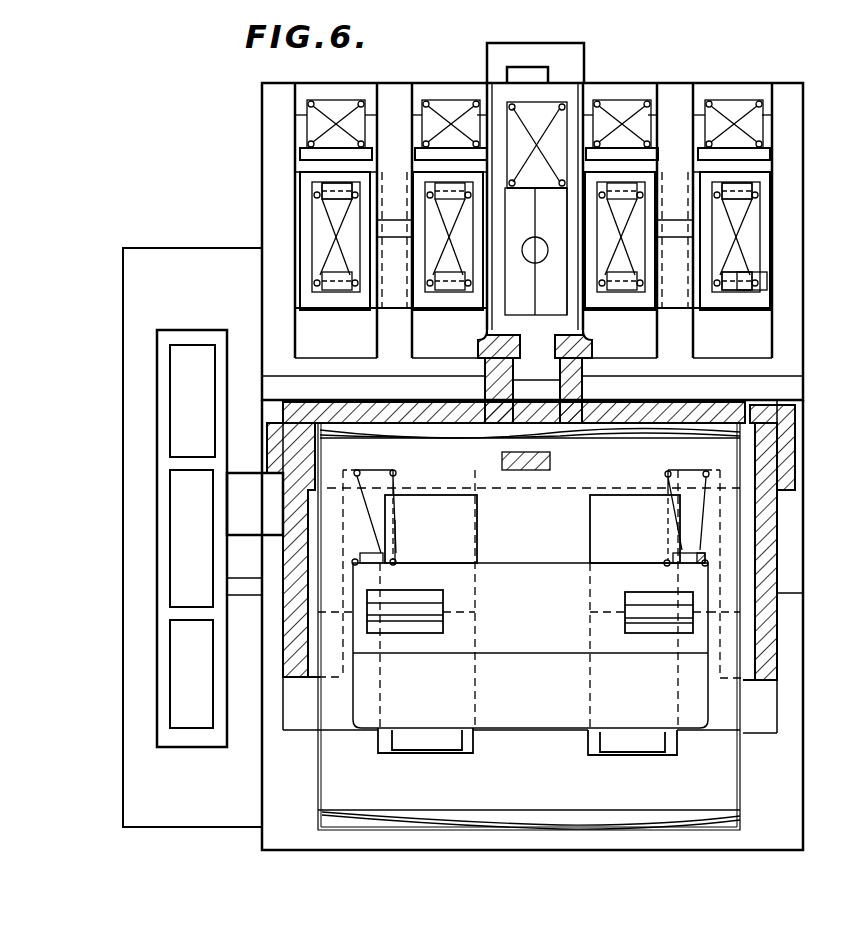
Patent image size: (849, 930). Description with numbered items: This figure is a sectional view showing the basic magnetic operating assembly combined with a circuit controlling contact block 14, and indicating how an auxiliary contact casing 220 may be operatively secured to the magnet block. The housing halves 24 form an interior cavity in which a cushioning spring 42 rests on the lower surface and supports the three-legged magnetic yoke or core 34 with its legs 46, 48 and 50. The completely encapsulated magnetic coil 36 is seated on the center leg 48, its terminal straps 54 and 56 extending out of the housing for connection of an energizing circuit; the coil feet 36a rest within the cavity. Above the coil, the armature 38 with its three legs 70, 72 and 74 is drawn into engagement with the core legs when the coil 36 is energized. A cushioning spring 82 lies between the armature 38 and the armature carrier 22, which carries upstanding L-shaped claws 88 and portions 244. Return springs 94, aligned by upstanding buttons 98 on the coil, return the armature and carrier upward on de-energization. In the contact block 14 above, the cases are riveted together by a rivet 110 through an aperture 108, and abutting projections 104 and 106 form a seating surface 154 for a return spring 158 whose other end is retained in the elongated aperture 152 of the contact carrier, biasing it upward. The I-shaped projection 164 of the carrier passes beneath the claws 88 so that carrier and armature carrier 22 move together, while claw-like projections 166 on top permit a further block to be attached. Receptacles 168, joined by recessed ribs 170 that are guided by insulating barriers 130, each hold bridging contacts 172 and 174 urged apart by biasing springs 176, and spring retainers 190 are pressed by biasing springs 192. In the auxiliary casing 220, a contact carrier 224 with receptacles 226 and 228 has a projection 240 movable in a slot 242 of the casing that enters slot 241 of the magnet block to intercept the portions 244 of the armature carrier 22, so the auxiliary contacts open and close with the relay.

The contact block 14 is at (810, 146).
The armature carrier 22 is at (816, 521).
The housing halves 24 is at (256, 842).
The magnetic yoke or core 34 is at (545, 789).
The magnetic coil 36 is at (525, 578).
The feet of armature block 36a is at (423, 740).
The armature 38 is at (790, 445).
The cushioning spring 42 is at (495, 830).
The leg of core 46 is at (378, 712).
The center leg of core 48 is at (590, 696).
The leg of core 50 is at (680, 691).
The terminal strap 54 is at (423, 596).
The terminal strap 56 is at (653, 598).
The armature leg 70 is at (396, 530).
The armature leg 72 is at (459, 599).
The armature leg 74 is at (590, 540).
The cushioning spring 82 is at (752, 408).
The L-shaped projections or claws 88 is at (478, 342).
The return springs 94 is at (374, 516).
The upstanding buttons 98 is at (398, 553).
The projection 104 is at (512, 298).
The projection 106 is at (558, 298).
The aperture 108 is at (541, 243).
The rivet 110 is at (530, 243).
The insulating barriers 130 is at (392, 100).
The elongated aperture 152 is at (523, 136).
The seating surface 154 is at (552, 188).
The return spring 158 is at (550, 130).
The I-shaped projection 164 is at (485, 367).
The claw-like projections 166 is at (555, 44).
The receptacles 168 is at (333, 240).
The recessed rib portions 170 is at (530, 240).
The bridging contact 172 is at (745, 283).
The bridging contact 174 is at (752, 196).
The biasing springs 176 is at (328, 212).
The spring retainers 190 is at (300, 153).
The biasing springs 192 is at (334, 112).
The casing 220 is at (123, 355).
The auxiliary contact carrier 224 is at (178, 552).
The receptacle 226 is at (182, 415).
The receptacle 228 is at (173, 690).
The projection 240 is at (233, 476).
The slot 241 is at (782, 590).
The slot 242 is at (262, 578).
The portions of armature carrier 244 is at (792, 472).